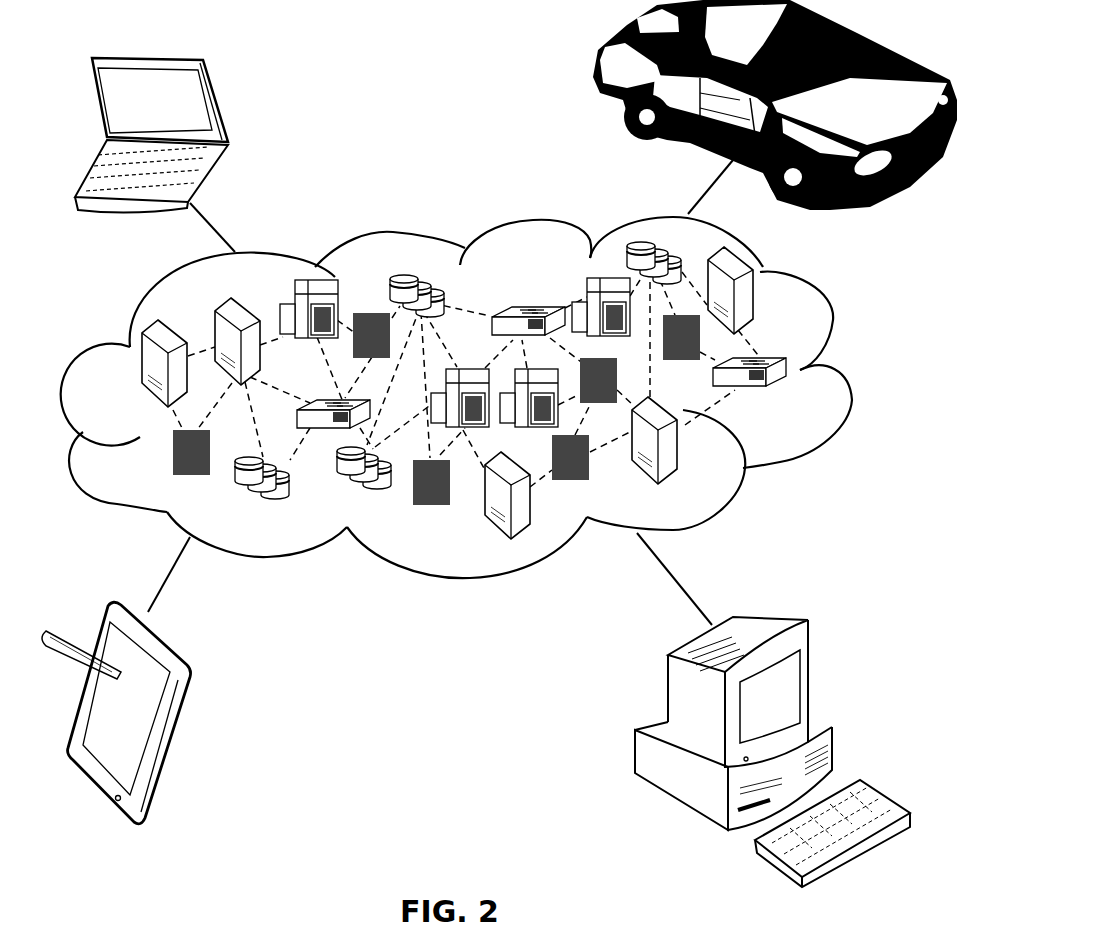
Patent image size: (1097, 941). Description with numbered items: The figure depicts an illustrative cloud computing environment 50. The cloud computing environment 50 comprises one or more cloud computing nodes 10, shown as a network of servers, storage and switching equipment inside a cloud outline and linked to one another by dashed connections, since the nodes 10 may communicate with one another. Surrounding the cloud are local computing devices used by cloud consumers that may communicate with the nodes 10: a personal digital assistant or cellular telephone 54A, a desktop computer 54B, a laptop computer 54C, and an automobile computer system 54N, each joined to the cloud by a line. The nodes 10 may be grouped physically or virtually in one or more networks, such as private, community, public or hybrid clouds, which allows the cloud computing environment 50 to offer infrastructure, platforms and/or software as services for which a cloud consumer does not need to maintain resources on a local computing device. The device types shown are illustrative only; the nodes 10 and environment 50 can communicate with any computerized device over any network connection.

The cloud computing node 10 is at (805, 405).
The cloud computing environment 50 is at (848, 365).
The personal digital assistant (PDA) or cellular telephone 54A is at (185, 703).
The desktop computer 54B is at (780, 614).
The laptop computer 54C is at (220, 105).
The automobile computer system 54N is at (594, 72).